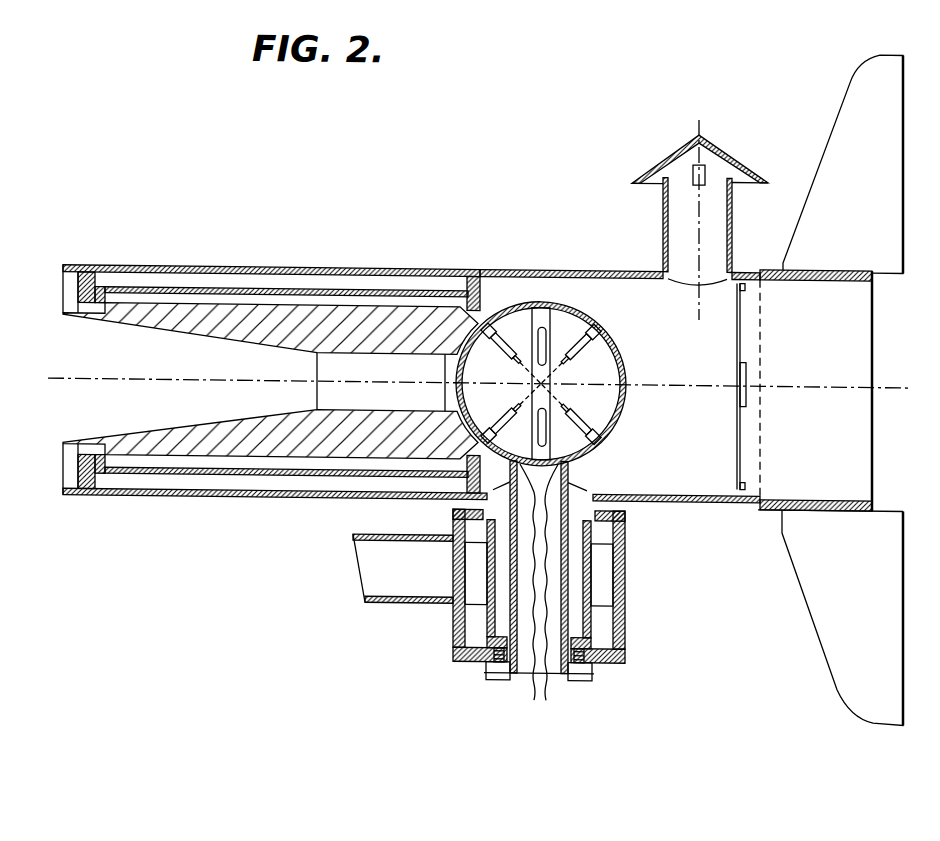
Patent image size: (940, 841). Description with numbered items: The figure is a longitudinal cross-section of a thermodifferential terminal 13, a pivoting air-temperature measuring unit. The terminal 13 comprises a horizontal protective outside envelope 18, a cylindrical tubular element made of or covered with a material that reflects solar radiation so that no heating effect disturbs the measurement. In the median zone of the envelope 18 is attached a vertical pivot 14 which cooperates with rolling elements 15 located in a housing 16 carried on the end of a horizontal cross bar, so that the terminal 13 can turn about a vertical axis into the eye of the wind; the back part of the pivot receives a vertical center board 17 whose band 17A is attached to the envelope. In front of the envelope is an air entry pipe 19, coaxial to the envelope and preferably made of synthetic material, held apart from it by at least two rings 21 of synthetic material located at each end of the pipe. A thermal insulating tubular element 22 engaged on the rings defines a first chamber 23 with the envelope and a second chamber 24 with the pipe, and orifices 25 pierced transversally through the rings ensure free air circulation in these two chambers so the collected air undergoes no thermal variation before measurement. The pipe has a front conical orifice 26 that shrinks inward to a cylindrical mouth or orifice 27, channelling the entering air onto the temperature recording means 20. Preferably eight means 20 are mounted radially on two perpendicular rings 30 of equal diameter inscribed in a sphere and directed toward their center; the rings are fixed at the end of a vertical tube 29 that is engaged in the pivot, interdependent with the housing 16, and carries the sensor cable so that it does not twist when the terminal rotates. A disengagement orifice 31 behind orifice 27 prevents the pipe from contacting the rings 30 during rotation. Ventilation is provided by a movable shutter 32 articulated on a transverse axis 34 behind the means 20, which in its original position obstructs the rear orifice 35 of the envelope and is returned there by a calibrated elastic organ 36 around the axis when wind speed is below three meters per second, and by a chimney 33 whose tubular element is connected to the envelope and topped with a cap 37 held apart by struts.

The thermodifferential terminal 13 is at (205, 544).
The vertical pivot 14 is at (587, 563).
The rolling elements 15 is at (607, 613).
The housing 16 is at (622, 661).
The vertical center board 17 is at (855, 108).
The band 17A is at (761, 503).
The protective outside envelope 18 is at (260, 262).
The air entry pipe 19 is at (273, 440).
The temperature recording means 20 is at (583, 342).
The rings 21 is at (100, 271).
The tubular element 22 is at (203, 285).
The first chamber 23 is at (150, 279).
The second chamber 24 is at (305, 296).
The orifices 25 is at (104, 477).
The conical orifice 26 is at (187, 415).
The cylindrical orifice 27 is at (385, 395).
The vertical tube 29 is at (522, 656).
The rings 30 is at (523, 295).
The disengagement orifice 31 is at (447, 404).
The movable shutter 32 is at (747, 464).
The chimney 33 is at (677, 235).
The axis 34 is at (743, 354).
The rear orifice 35 is at (850, 306).
The calibrated elastic organ 36 is at (748, 366).
The cap 37 is at (658, 152).